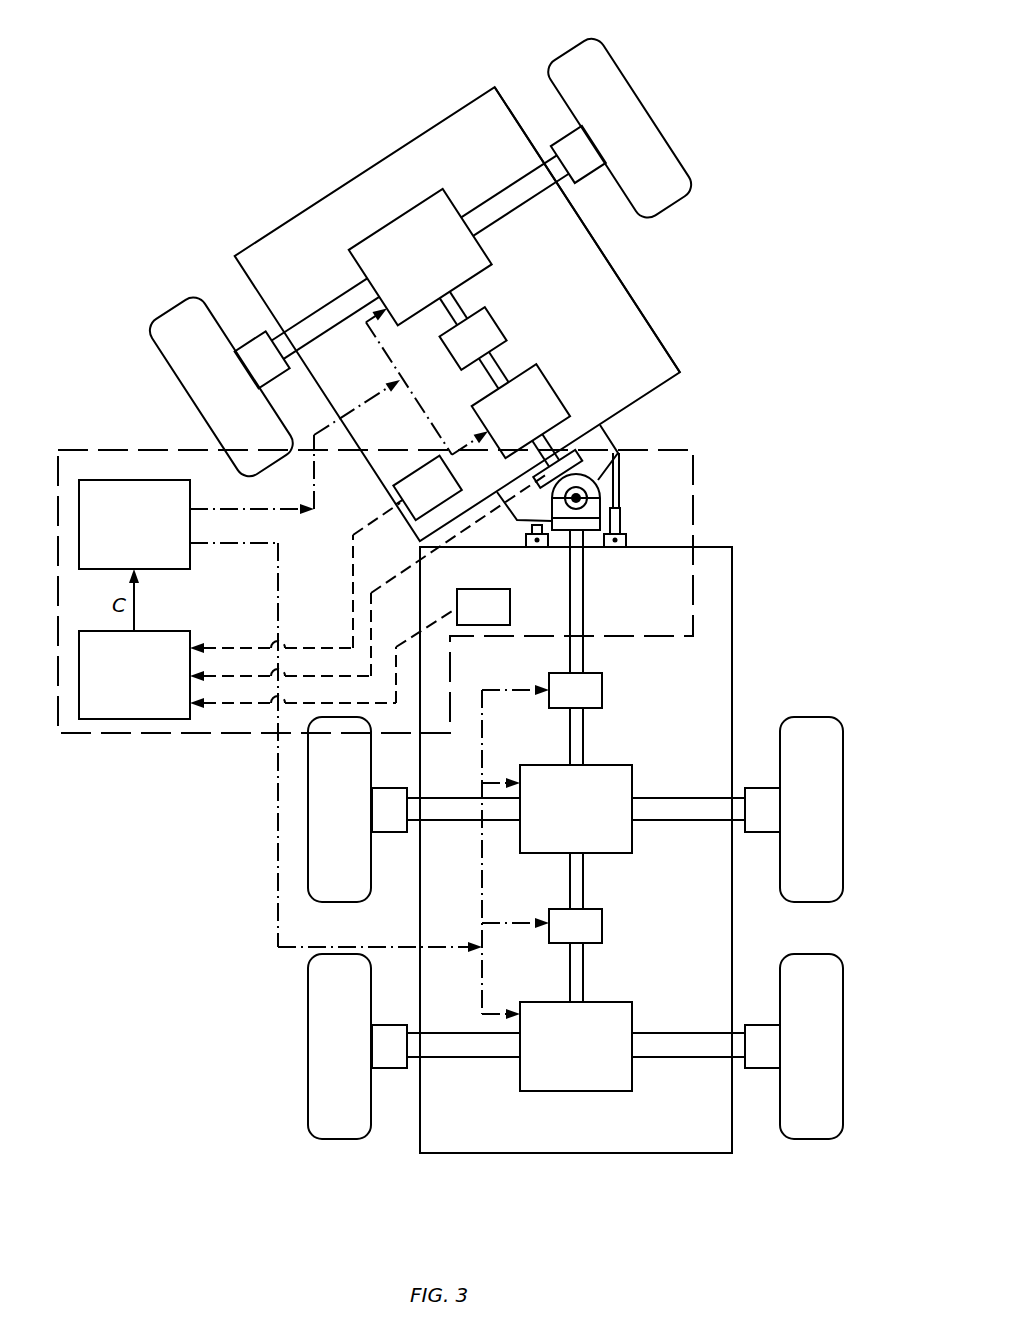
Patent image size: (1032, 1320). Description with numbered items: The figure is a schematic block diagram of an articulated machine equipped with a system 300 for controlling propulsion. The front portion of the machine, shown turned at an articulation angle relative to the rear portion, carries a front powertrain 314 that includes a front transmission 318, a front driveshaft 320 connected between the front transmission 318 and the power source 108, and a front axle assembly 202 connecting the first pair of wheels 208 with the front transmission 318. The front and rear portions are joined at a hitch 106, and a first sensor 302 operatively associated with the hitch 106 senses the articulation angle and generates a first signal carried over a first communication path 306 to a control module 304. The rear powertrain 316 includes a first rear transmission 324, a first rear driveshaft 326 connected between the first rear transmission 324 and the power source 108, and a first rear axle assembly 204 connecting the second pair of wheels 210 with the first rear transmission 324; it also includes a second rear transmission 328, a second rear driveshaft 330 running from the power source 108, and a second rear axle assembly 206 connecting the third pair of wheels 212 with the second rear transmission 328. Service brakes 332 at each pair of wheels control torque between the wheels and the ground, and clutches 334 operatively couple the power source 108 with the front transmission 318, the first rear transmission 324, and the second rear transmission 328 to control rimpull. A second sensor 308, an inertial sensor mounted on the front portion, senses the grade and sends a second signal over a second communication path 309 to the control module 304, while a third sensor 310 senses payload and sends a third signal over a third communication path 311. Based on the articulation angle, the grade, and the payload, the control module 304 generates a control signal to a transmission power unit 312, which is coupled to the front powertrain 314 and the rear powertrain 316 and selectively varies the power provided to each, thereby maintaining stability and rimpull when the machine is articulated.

The hitch 106 is at (590, 496).
The power source 108 is at (521, 411).
The front axle assembly 202 is at (497, 205).
The first rear axle assembly 204 is at (663, 815).
The second rear axle assembly 206 is at (663, 1057).
The first pair of wheels 208 is at (665, 135).
The second pair of wheels 210 is at (310, 806).
The third pair of wheels 212 is at (310, 1045).
The system 300 is at (167, 734).
The first sensor 302 is at (612, 452).
The control module 304 is at (134, 675).
The first communication path 306 is at (370, 620).
The second sensor 308 is at (424, 490).
The second communication path 309 is at (352, 558).
The third sensor 310 is at (483, 607).
The third communication path 311 is at (232, 706).
The transmission power unit 312 is at (134, 524).
The front powertrain 314 is at (668, 348).
The rear powertrain 316 is at (733, 648).
The front transmission 318 is at (420, 257).
The front driveshaft 320 is at (636, 300).
The first rear transmission 324 is at (576, 809).
The first rear driveshaft 326 is at (584, 737).
The second rear transmission 328 is at (576, 1046).
The second rear driveshaft 330 is at (573, 885).
The service brakes 332 is at (573, 148).
The clutches 334 is at (521, 625).